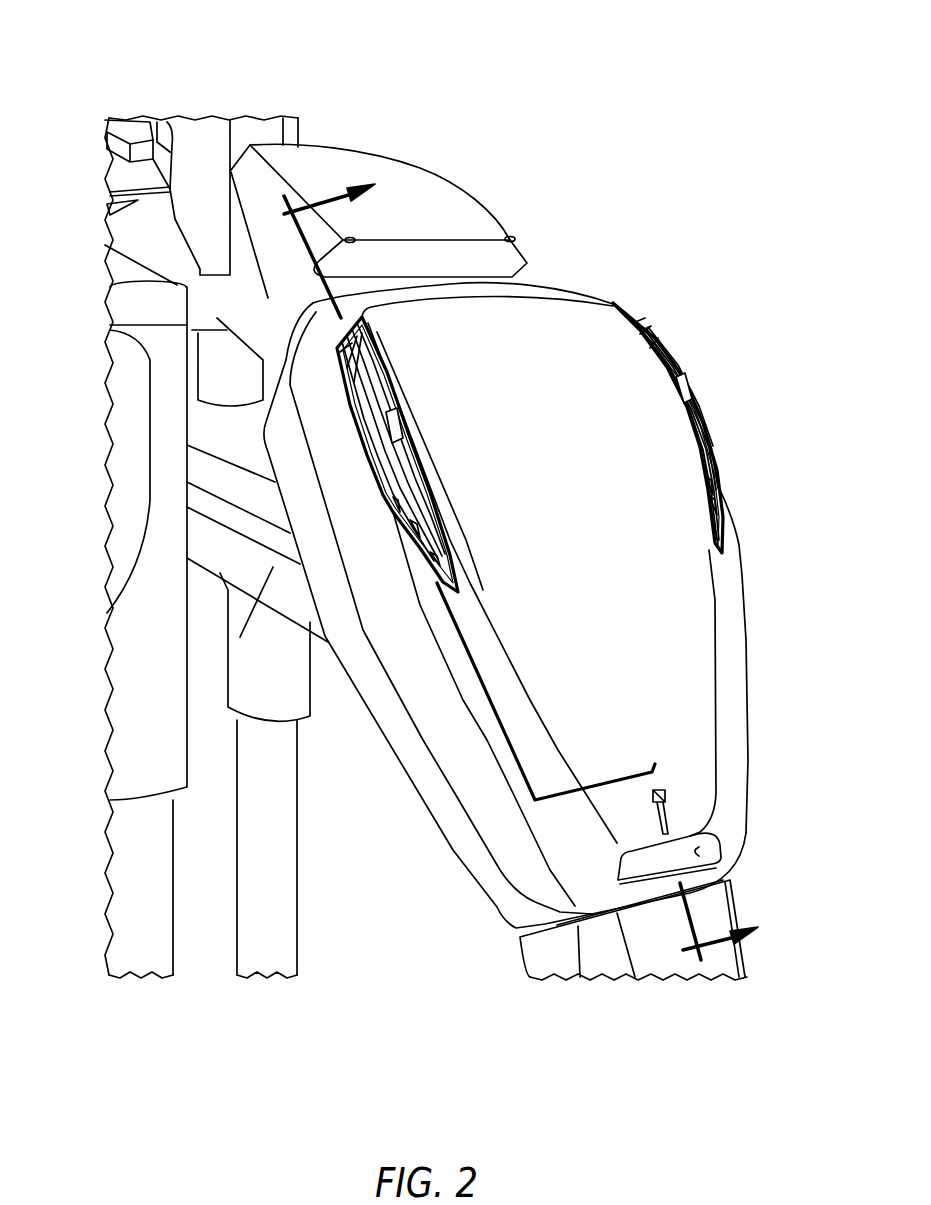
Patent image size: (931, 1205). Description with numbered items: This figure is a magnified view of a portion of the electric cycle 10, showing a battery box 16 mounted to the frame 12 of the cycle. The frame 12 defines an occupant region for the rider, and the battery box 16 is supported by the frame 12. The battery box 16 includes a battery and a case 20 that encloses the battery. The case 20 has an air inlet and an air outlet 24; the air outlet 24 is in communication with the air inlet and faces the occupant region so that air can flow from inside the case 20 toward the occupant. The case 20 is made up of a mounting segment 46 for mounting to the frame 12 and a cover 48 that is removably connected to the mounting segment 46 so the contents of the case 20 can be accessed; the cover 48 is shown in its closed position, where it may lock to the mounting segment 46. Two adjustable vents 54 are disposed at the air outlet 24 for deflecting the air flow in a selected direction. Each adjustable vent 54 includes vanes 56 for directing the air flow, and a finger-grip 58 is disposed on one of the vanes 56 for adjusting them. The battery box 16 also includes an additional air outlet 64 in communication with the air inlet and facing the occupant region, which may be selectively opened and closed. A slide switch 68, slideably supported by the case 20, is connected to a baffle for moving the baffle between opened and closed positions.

The electric cycle 10 is at (514, 68).
The frame 12 is at (275, 578).
The battery box 16 is at (597, 283).
The case 20 is at (668, 597).
The air outlet 24 is at (450, 575).
The mounting segment 46 is at (468, 841).
The cover 48 is at (710, 732).
The adjustable vent 54 is at (373, 442).
The vane 56 is at (410, 524).
The finger-grip 58 is at (397, 420).
The additional air outlet 64 is at (700, 849).
The slide switch 68 is at (667, 800).